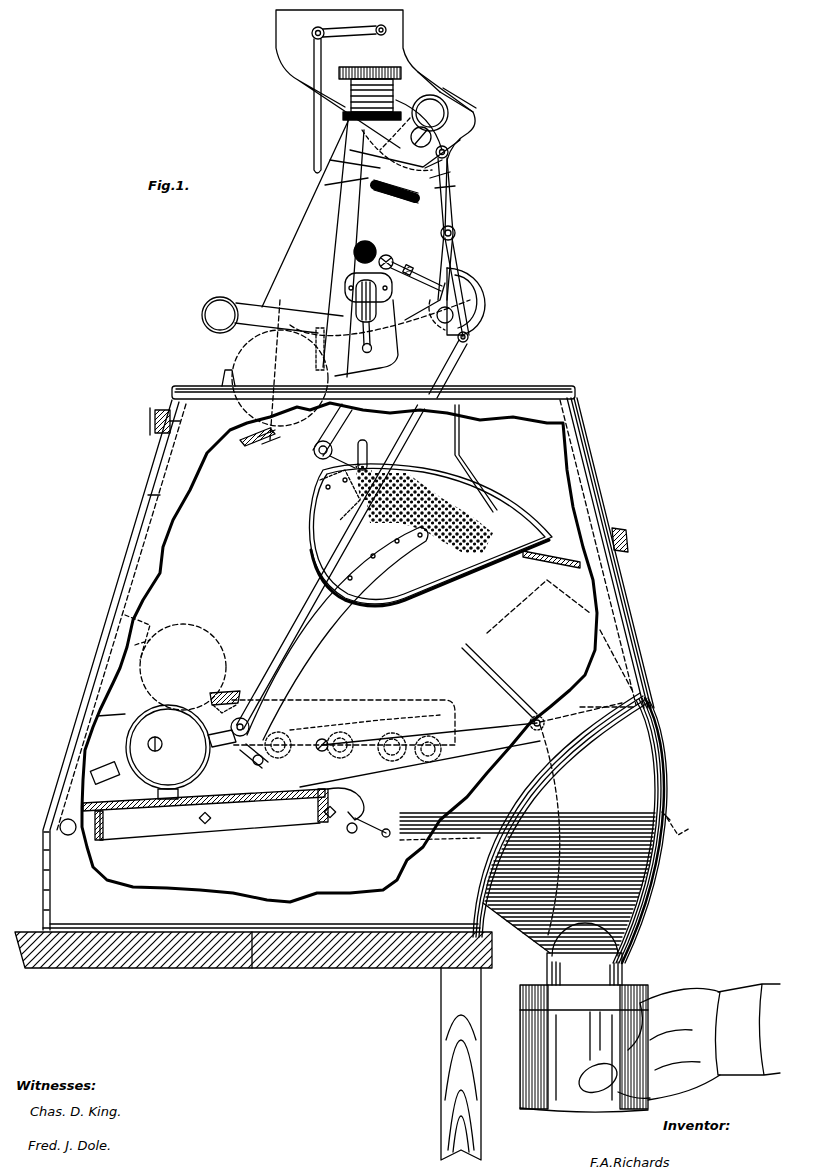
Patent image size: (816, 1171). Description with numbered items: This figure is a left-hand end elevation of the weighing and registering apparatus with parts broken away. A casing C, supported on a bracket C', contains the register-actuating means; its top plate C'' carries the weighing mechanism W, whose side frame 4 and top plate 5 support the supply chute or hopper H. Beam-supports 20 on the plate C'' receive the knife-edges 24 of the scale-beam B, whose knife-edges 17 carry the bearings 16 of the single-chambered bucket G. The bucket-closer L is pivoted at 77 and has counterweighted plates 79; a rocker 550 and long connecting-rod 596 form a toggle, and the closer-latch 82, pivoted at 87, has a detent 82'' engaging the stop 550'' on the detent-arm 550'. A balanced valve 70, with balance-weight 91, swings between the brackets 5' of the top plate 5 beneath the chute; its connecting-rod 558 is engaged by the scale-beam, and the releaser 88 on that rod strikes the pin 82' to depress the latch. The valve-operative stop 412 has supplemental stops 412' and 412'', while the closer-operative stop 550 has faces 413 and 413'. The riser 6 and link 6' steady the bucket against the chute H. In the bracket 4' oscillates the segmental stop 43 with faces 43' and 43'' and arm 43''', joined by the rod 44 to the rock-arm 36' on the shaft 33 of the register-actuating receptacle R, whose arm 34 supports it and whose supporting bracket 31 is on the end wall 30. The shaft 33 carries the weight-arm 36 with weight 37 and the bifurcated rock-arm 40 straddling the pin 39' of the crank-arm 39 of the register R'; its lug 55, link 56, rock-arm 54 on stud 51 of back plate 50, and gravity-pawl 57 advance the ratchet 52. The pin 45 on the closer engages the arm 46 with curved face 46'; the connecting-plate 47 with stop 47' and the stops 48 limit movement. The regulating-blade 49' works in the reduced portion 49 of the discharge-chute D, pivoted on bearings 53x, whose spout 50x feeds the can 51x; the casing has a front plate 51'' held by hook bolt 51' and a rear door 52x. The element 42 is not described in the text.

The supply chute or hopper H is at (358, 79).
The link 6' is at (341, 40).
The arm or riser 6 is at (304, 106).
The top plate or beam 5 is at (345, 95).
The arms or brackets 5' is at (465, 100).
The balance-weight 91 is at (440, 102).
The valve 70 is at (465, 145).
The valve-operative stop 412 is at (365, 135).
The supplemental stop 412' is at (325, 169).
The supplemental stop 412'' is at (466, 170).
The supplemental stop 413 is at (456, 146).
The supplemental stop 413' is at (467, 182).
The rocker 550 is at (468, 195).
The detent-arm 550' is at (392, 198).
The detent or stop 550'' is at (318, 185).
The connecting-rod 558 is at (456, 228).
The weighing mechanism W is at (455, 262).
The connecting-rod 596 is at (452, 262).
The side frame or upright 4 is at (338, 248).
The bucket G is at (330, 246).
The pivot 87 is at (376, 252).
The closer-latch 82 is at (395, 253).
The detent or stop 82'' is at (445, 276).
The releaser device or latch-actuator 88 is at (375, 287).
The pin 82' is at (374, 301).
The V-shaped bearings 16 is at (362, 336).
The pivot or knife-edge 17 is at (376, 353).
The bracket 42 is at (480, 292).
The stop 43 is at (485, 301).
The stop or working face 43' is at (421, 301).
The stop or working face 43'' is at (484, 312).
The integral arm 43''' is at (496, 340).
The rearward projection or bracket 4' is at (459, 318).
The scale-beam B is at (236, 312).
The pivot or knife-edge 24 is at (300, 318).
The beam-support 20 is at (316, 348).
The top plate C'' is at (363, 380).
The hook bolt 51' is at (174, 433).
The casing or chamber C is at (348, 664).
The removable front plate 51'' is at (184, 508).
The door 52x is at (600, 510).
The bracket C' is at (253, 936).
The discharge-chute D is at (477, 1047).
The counterweighted arms or plates 79 is at (255, 441).
The pivot 77 is at (300, 416).
The bucket-closer L is at (313, 446).
The upwardly-projecting arm 46 is at (373, 445).
The stop-face 46' is at (433, 458).
The pin 45 is at (345, 493).
The connecting-rod 44 is at (303, 592).
The arm 34 is at (316, 636).
The register-actuating receptacle R is at (430, 534).
The regulator or regulating-blade 49' is at (538, 743).
The end wall 30 is at (97, 716).
The bracket 31 is at (230, 690).
The lug 55 is at (238, 690).
The register R' is at (343, 711).
The back plate 50 is at (340, 702).
The link 56 is at (283, 733).
The stud 51 is at (461, 745).
The stops 48 is at (409, 733).
The shaft 33 is at (230, 730).
The rock-arm 36' is at (200, 733).
The bifurcated rock-arm 40 is at (220, 755).
The weight 37 is at (128, 741).
The crank-arm 39 is at (242, 759).
The wrist or pin 39' is at (249, 770).
The weight-carrying arm 36 is at (107, 780).
The connecting-plate 47 is at (223, 819).
The stop 47' is at (140, 817).
The gravity-pawl 57 is at (258, 792).
The rock-arm 54 is at (282, 792).
The ratchet 52 is at (305, 792).
The bearings 53x is at (385, 837).
The reduced portion 49 is at (533, 839).
The cylindrical spout 50x is at (622, 958).
The can 51x is at (520, 1068).